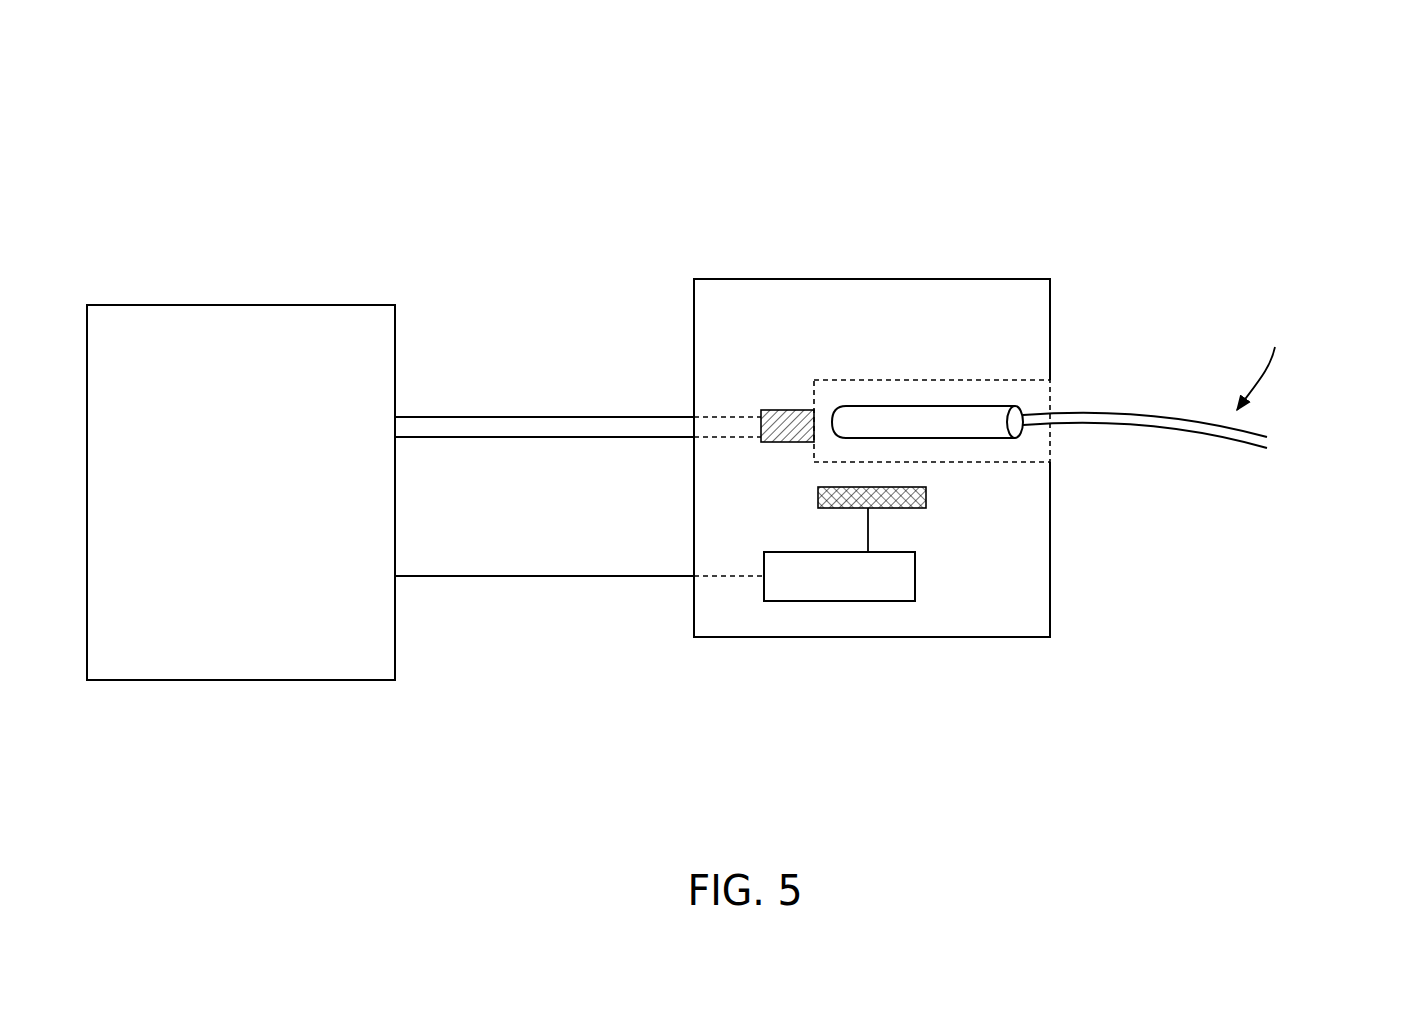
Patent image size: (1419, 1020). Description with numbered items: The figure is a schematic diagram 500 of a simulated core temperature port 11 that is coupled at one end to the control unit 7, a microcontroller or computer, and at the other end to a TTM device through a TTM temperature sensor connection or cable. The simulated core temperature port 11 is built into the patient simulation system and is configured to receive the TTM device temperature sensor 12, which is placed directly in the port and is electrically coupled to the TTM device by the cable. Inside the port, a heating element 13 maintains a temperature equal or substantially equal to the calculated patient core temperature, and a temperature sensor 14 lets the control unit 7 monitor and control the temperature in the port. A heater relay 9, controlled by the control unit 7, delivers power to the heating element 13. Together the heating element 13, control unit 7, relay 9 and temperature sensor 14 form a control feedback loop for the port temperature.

The schematic diagram 500 is at (183, 104).
The control unit 7 is at (328, 338).
The simulated core temperature port 11 is at (858, 341).
The TTM device temperature sensor 12 is at (996, 398).
The heating element 13 is at (938, 497).
The temperature sensor 14 is at (768, 450).
The heater relay 9 is at (878, 587).